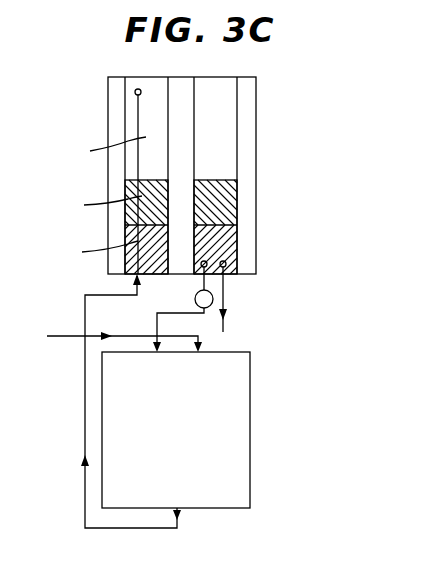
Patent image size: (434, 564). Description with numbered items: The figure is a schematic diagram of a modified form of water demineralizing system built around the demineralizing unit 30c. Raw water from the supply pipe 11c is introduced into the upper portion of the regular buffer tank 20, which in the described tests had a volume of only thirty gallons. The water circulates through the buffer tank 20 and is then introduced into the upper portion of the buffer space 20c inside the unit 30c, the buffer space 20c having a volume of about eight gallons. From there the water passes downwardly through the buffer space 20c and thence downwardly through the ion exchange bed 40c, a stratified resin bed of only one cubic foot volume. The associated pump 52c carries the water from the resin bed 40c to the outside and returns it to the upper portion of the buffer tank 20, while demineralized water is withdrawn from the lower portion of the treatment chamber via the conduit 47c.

The demineralizing unit 30c is at (178, 162).
The buffer space 20c is at (234, 148).
The ion exchange bed 40c is at (238, 225).
The pump 52c is at (195, 296).
The conduit 47c is at (226, 306).
The supply pipe 11c is at (72, 332).
The buffer tank 20 is at (176, 430).